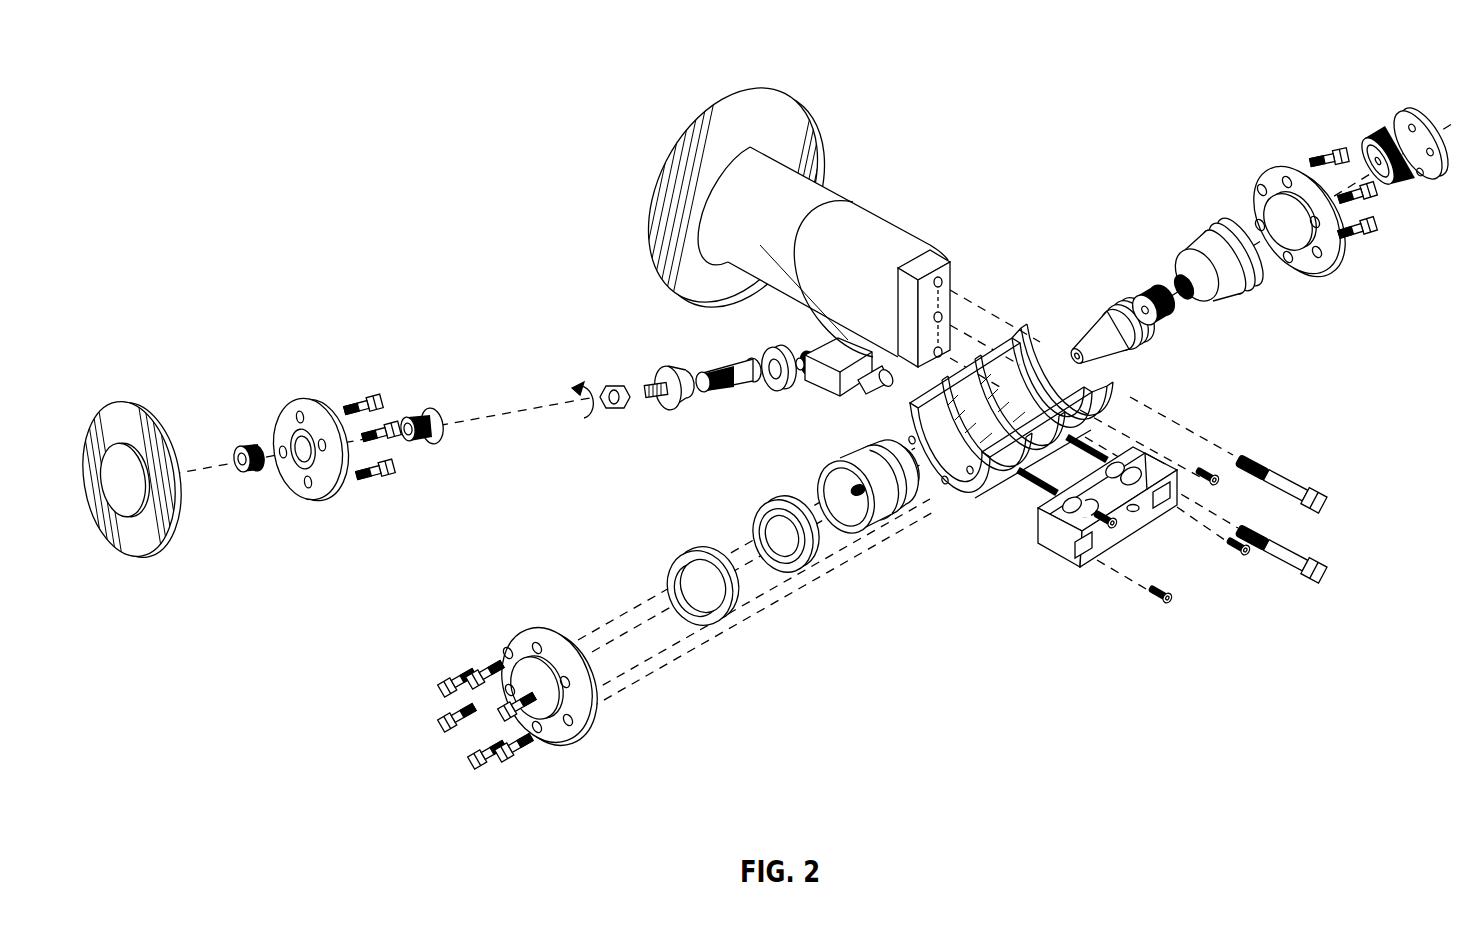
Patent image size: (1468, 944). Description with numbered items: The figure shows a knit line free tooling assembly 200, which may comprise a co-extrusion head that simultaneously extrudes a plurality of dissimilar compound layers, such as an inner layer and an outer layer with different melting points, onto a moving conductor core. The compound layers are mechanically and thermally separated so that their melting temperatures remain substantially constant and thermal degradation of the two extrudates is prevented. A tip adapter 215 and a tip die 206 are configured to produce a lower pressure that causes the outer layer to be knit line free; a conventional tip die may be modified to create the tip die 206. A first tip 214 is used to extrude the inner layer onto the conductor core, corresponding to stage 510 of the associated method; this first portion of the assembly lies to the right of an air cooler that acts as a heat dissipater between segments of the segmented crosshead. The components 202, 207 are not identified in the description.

The knit line free tooling assembly 200 is at (664, 74).
The housing 202 is at (905, 405).
The tip die 206 is at (758, 508).
The end cap 207 is at (820, 470).
The first tip 214 is at (1102, 315).
The tip adapter 215 is at (676, 562).
The stage 510 is at (1110, 405).